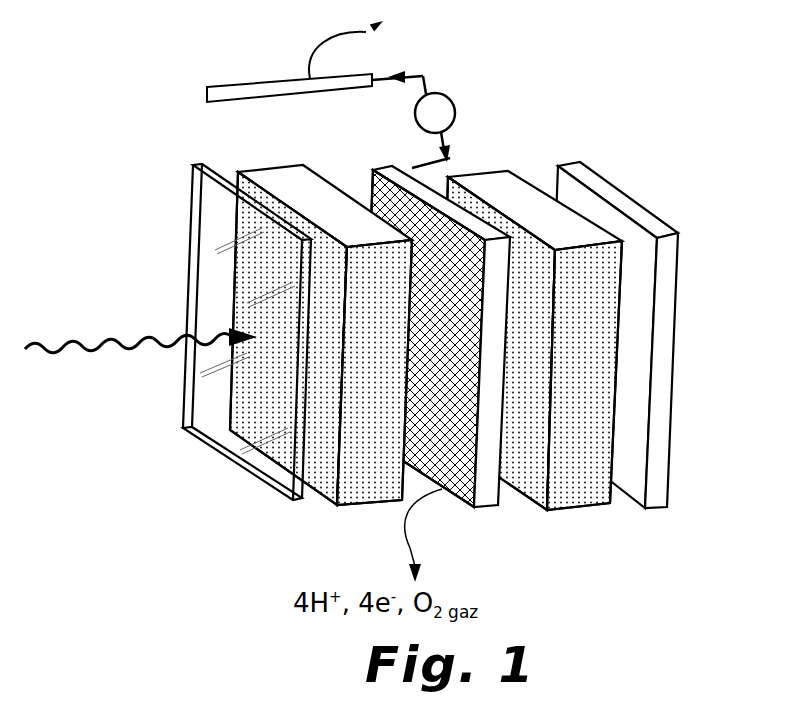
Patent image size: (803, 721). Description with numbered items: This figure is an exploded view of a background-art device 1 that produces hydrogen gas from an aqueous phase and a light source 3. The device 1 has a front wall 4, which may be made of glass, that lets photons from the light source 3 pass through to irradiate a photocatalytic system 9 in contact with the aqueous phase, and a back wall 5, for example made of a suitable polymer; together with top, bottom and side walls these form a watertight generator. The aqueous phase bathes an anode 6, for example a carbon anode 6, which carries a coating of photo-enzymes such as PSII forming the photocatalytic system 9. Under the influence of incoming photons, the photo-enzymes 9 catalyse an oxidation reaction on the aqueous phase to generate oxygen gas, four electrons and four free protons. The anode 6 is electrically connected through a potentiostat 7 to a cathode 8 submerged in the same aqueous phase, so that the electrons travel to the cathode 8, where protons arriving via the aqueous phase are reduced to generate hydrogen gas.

The device 1 is at (200, 142).
The light source 3 is at (141, 333).
The front wall 4 is at (210, 232).
The back wall 5 is at (657, 228).
The anode 6 is at (412, 183).
The potentiostat 7 is at (453, 95).
The cathode 8 is at (241, 80).
The photocatalytic system 9 is at (440, 262).